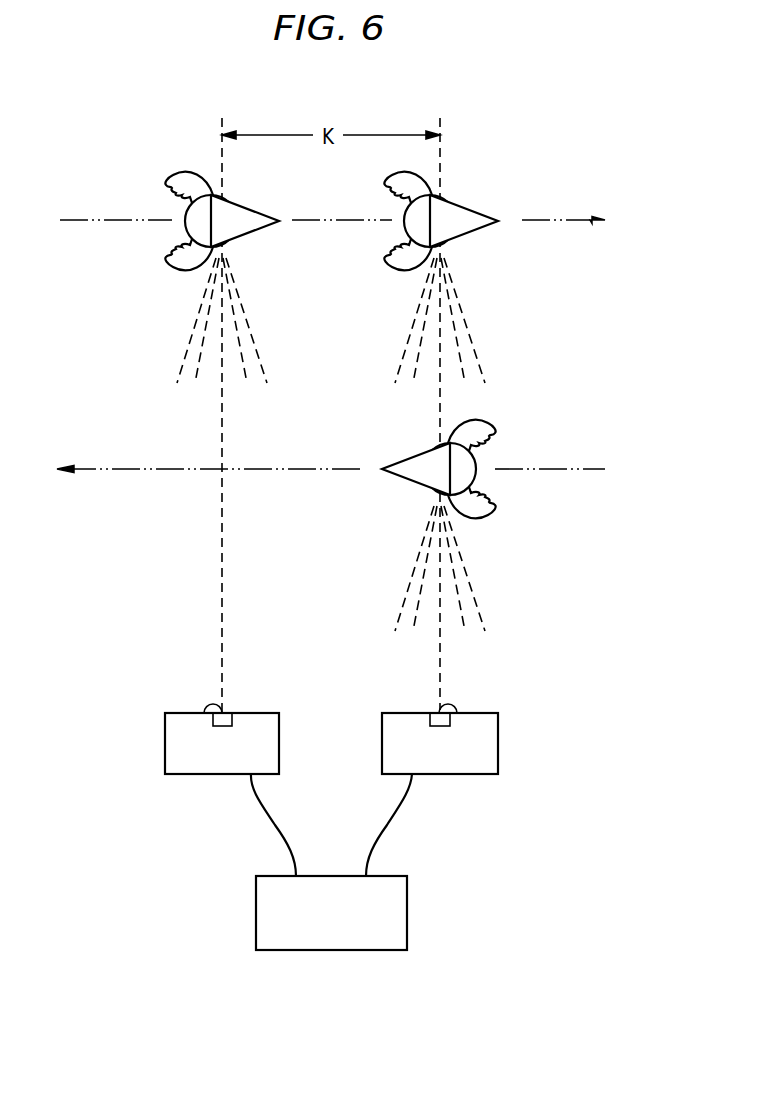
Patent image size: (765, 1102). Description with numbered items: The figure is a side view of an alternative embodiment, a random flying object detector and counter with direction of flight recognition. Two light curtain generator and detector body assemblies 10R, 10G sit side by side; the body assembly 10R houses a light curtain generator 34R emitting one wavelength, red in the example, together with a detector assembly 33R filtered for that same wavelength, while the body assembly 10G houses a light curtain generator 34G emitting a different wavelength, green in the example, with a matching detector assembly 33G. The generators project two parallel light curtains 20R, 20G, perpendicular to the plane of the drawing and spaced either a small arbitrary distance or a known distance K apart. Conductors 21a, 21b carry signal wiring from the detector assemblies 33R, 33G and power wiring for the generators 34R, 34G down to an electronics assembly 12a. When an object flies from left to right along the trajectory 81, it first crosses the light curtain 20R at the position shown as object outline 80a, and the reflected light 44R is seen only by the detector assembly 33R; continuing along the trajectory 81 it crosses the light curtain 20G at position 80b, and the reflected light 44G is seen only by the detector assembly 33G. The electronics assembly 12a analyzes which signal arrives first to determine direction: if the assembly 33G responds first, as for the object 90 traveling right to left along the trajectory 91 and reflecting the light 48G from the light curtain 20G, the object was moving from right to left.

The object outline 80a is at (167, 174).
The object position 80b is at (453, 206).
The trajectory 81 is at (567, 220).
The trajectory 91 is at (113, 468).
The object 90 is at (490, 432).
The reflected light 44R is at (193, 329).
The reflected light 44G is at (467, 318).
The reflected light 48G is at (470, 573).
The light curtain 20R is at (222, 644).
The light curtain 20G is at (442, 670).
The light curtain generator and detector body assembly 10R is at (165, 740).
The light curtain generator and detector body assembly 10G is at (500, 746).
The detector assembly 33R is at (207, 709).
The detector assembly 33G is at (460, 710).
The light curtain generator 34R is at (232, 722).
The light curtain generator 34G is at (430, 722).
The conductor 21a is at (262, 813).
The conductor 21b is at (400, 815).
The electronics assembly 12a is at (409, 917).